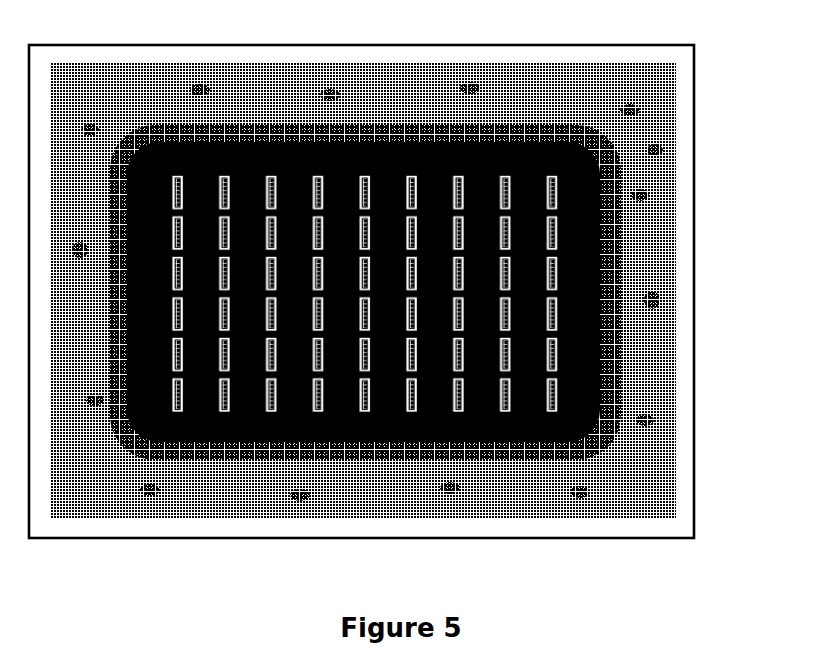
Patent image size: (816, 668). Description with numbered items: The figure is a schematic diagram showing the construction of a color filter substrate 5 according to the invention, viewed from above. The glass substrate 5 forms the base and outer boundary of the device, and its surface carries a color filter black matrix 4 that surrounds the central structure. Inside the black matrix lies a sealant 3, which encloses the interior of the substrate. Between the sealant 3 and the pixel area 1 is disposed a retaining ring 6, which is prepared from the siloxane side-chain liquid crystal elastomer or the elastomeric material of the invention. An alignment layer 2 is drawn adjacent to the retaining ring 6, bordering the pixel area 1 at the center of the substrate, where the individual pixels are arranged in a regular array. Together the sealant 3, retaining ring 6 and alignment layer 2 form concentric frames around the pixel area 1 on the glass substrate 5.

The pixel area 1 is at (547, 352).
The alignment layer 2 is at (616, 262).
The sealant 3 is at (643, 189).
The color filter black matrix 4 is at (667, 126).
The glass substrate 5 is at (684, 70).
The retaining ring 6 is at (594, 392).